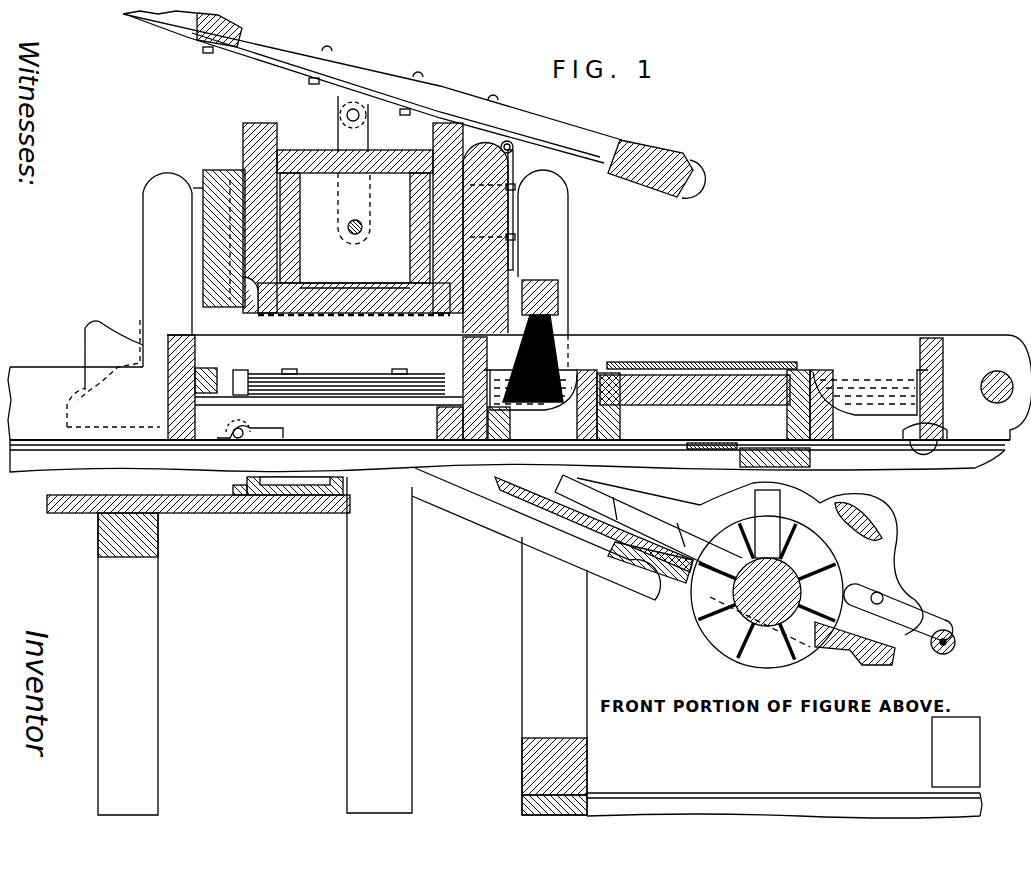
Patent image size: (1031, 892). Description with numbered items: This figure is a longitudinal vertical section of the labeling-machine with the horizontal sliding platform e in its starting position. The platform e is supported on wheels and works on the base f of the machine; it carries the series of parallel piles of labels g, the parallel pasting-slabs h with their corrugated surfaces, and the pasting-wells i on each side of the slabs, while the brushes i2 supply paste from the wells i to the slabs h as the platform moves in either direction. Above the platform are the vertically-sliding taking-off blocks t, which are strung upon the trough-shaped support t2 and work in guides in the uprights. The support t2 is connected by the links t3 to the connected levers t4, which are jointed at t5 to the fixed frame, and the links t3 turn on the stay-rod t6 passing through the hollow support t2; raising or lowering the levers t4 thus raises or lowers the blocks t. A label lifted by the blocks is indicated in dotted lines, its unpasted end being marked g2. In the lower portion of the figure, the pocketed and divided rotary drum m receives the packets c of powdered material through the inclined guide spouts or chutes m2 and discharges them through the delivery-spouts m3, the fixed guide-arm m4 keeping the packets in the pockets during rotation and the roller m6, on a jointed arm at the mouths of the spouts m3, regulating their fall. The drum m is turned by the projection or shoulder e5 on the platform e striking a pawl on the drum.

The connected levers t4 is at (343, 62).
The links t3 is at (340, 133).
The trough-shaped support t2 is at (298, 233).
The stay-rod t6 is at (361, 233).
The joint t5 is at (514, 160).
The taking-off blocks t is at (328, 232).
The unpasted end g2 is at (258, 315).
The piles of labels g is at (352, 388).
The projection or shoulder e5 is at (100, 360).
The horizontal sliding platform e is at (519, 480).
The brushes i2 is at (557, 343).
The pasting-wells i is at (706, 391).
The pasting-slabs h is at (698, 372).
The base f is at (507, 631).
The inclined guide spouts or chutes m2 is at (632, 486).
The packets c is at (667, 526).
The pocketed and divided rotary drum m is at (767, 592).
The fixed guide-arm m4 is at (873, 522).
The roller m6 is at (959, 635).
The delivery-spouts m3 is at (905, 650).